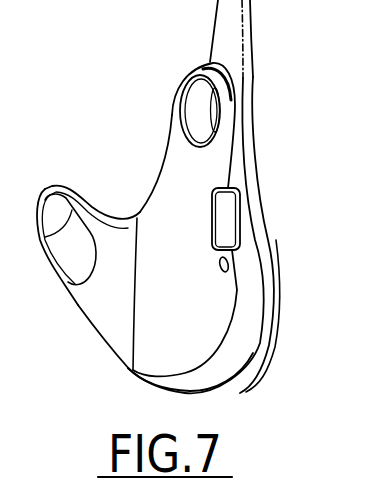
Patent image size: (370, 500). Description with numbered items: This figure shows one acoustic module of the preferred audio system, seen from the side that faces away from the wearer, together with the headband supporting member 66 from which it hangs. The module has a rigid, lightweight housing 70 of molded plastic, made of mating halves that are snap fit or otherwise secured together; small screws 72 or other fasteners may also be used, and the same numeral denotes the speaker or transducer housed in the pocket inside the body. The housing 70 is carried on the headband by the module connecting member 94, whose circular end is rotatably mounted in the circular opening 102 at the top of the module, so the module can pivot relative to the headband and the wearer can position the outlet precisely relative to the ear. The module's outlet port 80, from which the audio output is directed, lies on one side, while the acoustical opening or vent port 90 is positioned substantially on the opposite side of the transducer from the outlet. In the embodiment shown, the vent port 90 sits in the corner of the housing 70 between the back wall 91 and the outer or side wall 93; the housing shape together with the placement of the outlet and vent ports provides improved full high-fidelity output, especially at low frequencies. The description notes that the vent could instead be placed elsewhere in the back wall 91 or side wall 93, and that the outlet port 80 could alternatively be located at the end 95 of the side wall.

The headband supporting member 66 is at (213, 20).
The module connecting member 94 is at (257, 82).
The circular opening 102 is at (192, 108).
The end of the side wall 95 is at (40, 193).
The outlet port 80 is at (70, 253).
The speaker or transducer 72 is at (220, 268).
The acoustical opening or vent port 90 is at (228, 228).
The housing or body 70 is at (264, 322).
The back wall 91 is at (145, 340).
The outer or side wall 93 is at (230, 362).